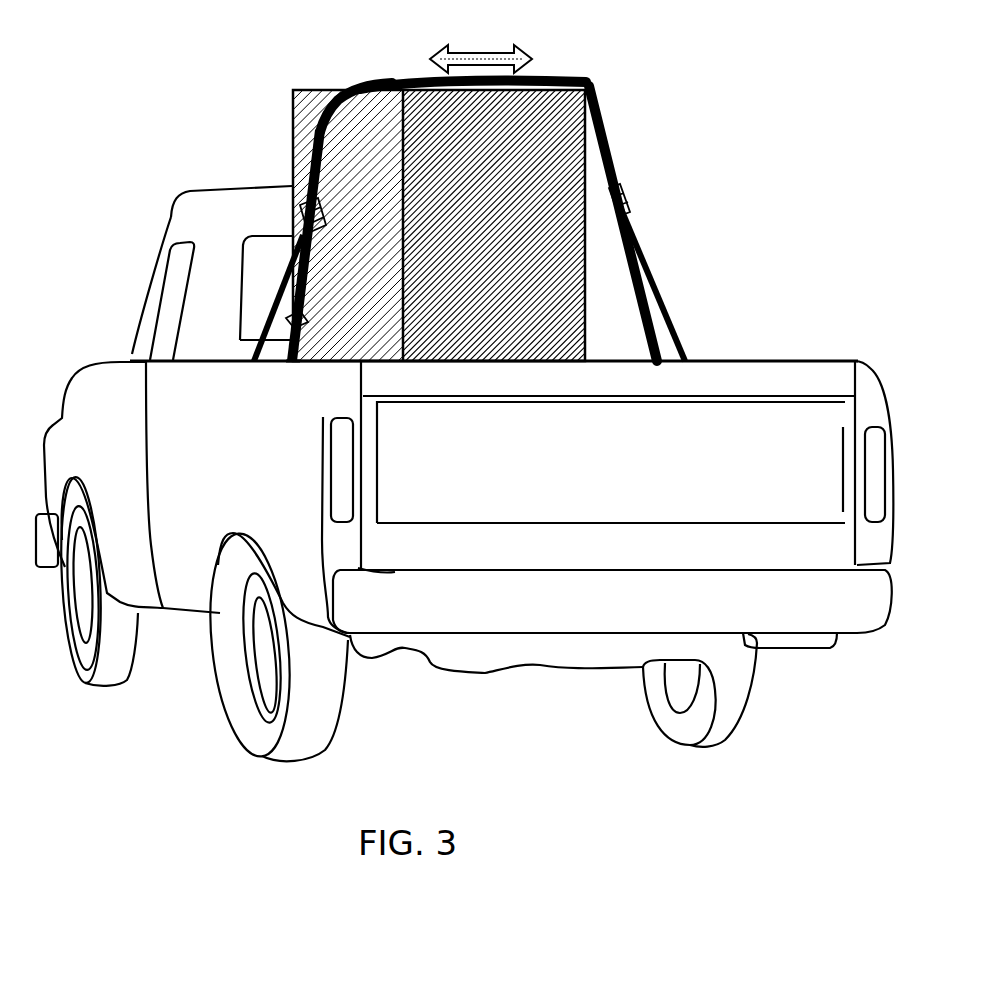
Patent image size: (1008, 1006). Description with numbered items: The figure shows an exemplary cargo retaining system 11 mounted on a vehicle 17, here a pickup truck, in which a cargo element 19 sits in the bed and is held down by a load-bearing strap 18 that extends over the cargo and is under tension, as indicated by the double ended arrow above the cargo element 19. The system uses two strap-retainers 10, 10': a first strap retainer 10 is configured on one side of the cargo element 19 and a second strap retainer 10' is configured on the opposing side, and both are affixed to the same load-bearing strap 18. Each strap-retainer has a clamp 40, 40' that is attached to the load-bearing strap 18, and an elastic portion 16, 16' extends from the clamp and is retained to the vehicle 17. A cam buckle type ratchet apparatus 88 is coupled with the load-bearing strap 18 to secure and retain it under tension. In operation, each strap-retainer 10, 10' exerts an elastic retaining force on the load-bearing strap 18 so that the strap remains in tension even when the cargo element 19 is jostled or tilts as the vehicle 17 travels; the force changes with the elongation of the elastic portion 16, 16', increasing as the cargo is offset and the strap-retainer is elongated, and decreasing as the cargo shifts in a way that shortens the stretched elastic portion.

The strap-retainer 10 is at (279, 245).
The second strap-retainer 10' is at (661, 223).
The cargo retaining system 11 is at (585, 63).
The elastic portion 16 is at (245, 298).
The elastic portion of second strap-retainer 16' is at (675, 275).
The vehicle 17 is at (178, 220).
The load-bearing strap 18 is at (390, 80).
The cargo element 19 is at (323, 97).
The clamp 40 is at (268, 260).
The clamp of second strap-retainer 40' is at (655, 172).
The cam buckle type ratchet apparatus 88 is at (310, 370).